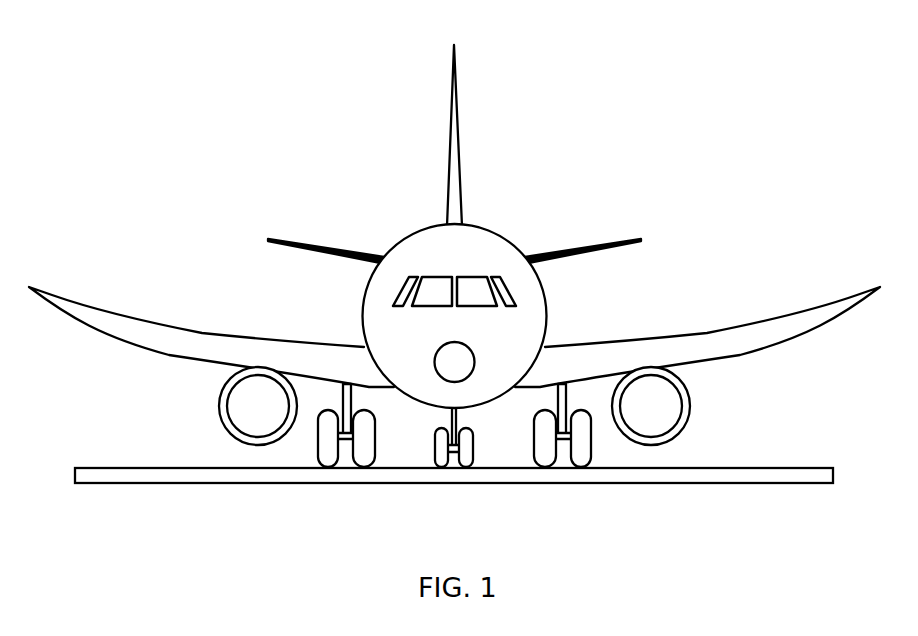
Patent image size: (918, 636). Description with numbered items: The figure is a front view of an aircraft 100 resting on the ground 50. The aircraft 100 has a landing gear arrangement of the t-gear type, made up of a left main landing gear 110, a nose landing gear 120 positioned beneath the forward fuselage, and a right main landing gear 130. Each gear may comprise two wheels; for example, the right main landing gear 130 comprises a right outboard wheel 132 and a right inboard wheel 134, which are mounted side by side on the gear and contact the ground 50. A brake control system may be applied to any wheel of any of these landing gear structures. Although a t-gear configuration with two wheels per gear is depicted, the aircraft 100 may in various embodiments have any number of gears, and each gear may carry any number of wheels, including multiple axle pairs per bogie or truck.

The aircraft 100 is at (454, 289).
The ground 50 is at (732, 467).
The left main landing gear 110 is at (542, 467).
The nose landing gear 120 is at (475, 465).
The right main landing gear 130 is at (344, 458).
The right outboard wheel 132 is at (325, 465).
The right inboard wheel 134 is at (365, 465).